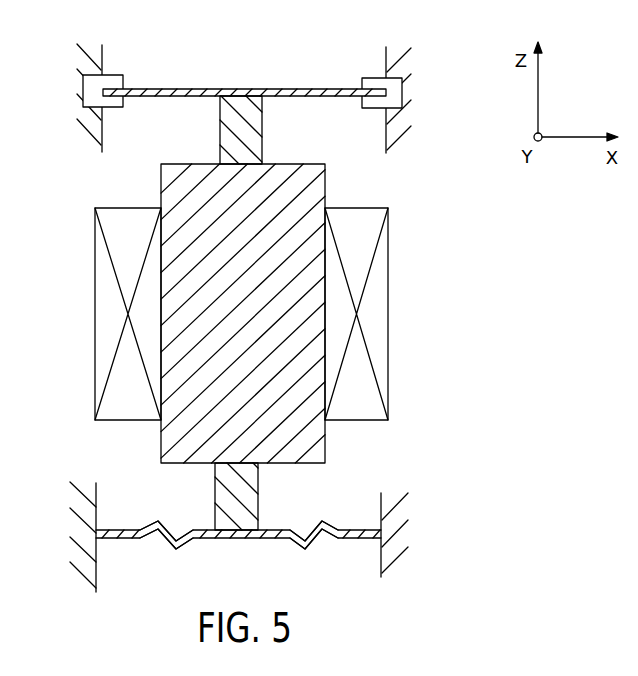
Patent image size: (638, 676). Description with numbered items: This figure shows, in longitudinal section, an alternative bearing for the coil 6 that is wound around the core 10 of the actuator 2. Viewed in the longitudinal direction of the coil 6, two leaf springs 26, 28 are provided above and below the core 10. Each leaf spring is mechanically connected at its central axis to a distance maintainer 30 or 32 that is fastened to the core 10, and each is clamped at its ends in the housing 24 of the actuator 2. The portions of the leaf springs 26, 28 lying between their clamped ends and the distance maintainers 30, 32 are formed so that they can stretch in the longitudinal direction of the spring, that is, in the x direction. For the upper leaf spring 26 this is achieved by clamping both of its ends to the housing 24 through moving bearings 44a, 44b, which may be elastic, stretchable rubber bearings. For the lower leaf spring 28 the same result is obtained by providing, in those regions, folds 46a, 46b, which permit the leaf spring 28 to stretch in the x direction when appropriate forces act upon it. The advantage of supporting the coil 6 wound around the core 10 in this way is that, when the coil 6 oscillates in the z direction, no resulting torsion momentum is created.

The actuator 2 is at (356, 58).
The coil 6 is at (343, 310).
The core 10 is at (270, 259).
The housing 24 is at (84, 62).
The leaf spring 26 is at (167, 87).
The leaf spring 28 is at (238, 553).
The distance maintainer 30 is at (246, 151).
The distance maintainer 32 is at (245, 500).
The moving bearing 44a is at (110, 100).
The moving bearing 44b is at (375, 103).
The fold 46a is at (165, 543).
The fold 46b is at (320, 541).